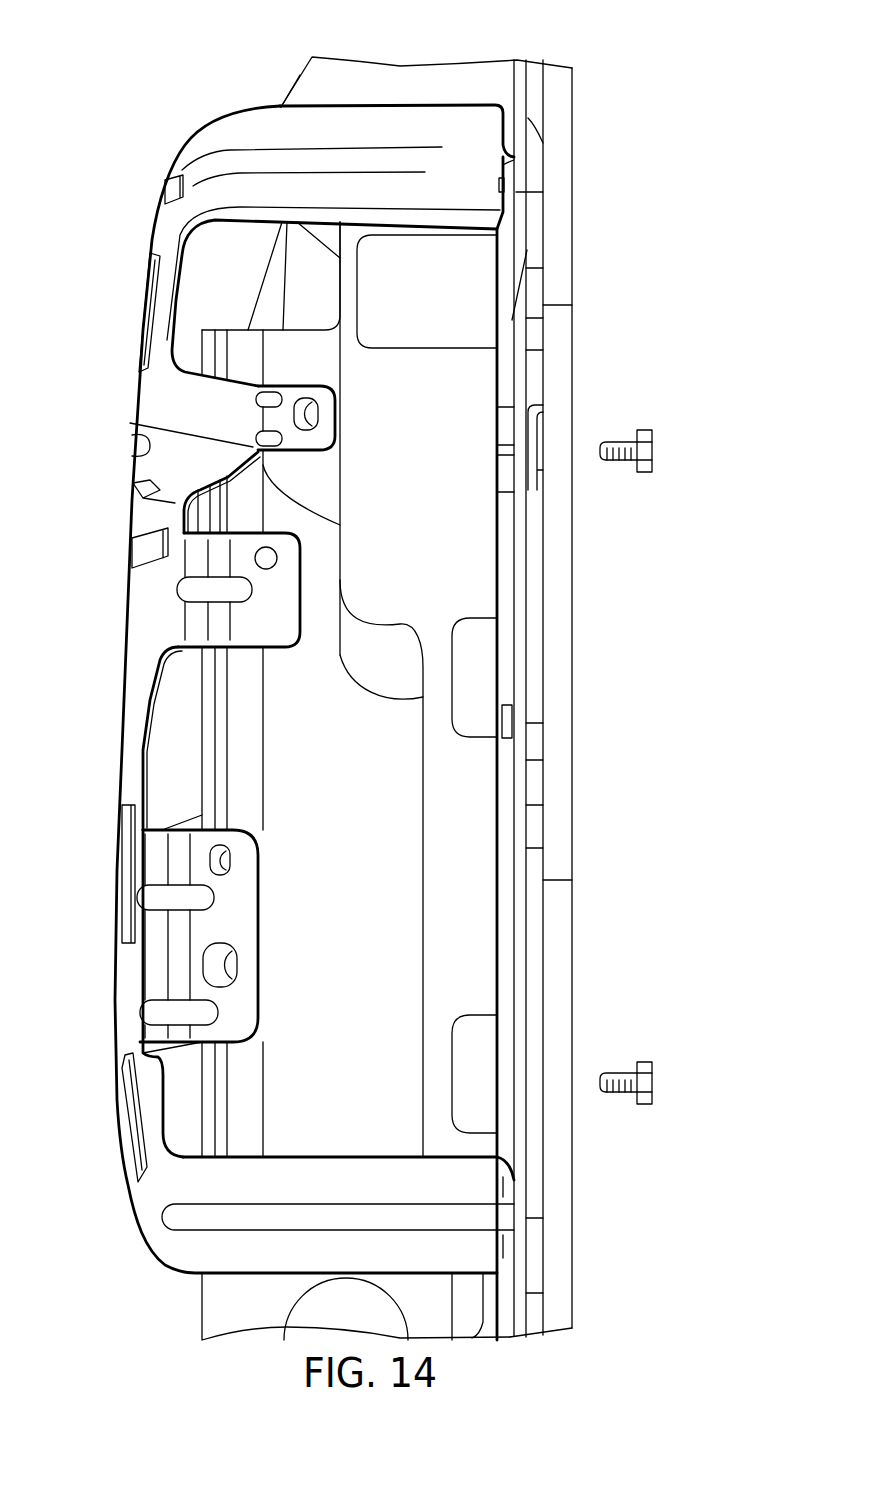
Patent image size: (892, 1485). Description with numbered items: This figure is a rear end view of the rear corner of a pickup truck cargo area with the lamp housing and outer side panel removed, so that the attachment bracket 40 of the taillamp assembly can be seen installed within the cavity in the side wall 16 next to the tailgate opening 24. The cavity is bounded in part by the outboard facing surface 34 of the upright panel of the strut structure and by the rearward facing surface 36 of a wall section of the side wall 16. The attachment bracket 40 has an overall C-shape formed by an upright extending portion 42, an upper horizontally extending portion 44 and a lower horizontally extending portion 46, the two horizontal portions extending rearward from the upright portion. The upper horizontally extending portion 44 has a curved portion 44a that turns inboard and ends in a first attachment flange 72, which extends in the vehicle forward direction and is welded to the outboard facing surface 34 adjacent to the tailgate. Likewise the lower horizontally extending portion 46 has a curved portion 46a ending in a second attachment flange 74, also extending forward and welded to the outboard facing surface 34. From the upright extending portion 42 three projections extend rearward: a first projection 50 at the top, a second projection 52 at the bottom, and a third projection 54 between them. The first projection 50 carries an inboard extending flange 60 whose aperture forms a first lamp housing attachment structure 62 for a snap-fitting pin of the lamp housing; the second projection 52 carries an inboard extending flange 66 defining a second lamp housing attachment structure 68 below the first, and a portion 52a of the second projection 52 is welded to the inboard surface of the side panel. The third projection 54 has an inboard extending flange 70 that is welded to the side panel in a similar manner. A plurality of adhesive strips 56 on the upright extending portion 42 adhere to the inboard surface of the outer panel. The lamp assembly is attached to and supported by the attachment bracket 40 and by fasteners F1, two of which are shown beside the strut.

The side wall 16 is at (467, 44).
The tailgate opening 24 is at (572, 337).
The outboard facing surface 34 is at (512, 420).
The rearward facing surface 36 is at (453, 543).
The attachment bracket 40 is at (213, 119).
The upright extending portion 42 is at (138, 683).
The upper horizontally extending portion 44 is at (353, 128).
The curved portion 44a is at (250, 106).
The lower horizontally extending portion 46 is at (307, 1155).
The curved portion 46a is at (252, 1250).
The first projection 50 is at (272, 384).
The second projection 52 is at (180, 847).
The portion of the second projection 52a is at (225, 857).
The third projection 54 is at (218, 555).
The adhesive strips 56 is at (172, 192).
The inboard extending flange 60 is at (323, 432).
The first lamp housing attachment structure 62 is at (307, 413).
The inboard extending flange 66 is at (240, 900).
The second lamp housing attachment structure 68 is at (227, 960).
The inboard extending flange 70 is at (277, 613).
The first attachment flange 72 is at (512, 166).
The second attachment flange 74 is at (512, 1193).
The fasteners F1 is at (653, 463).